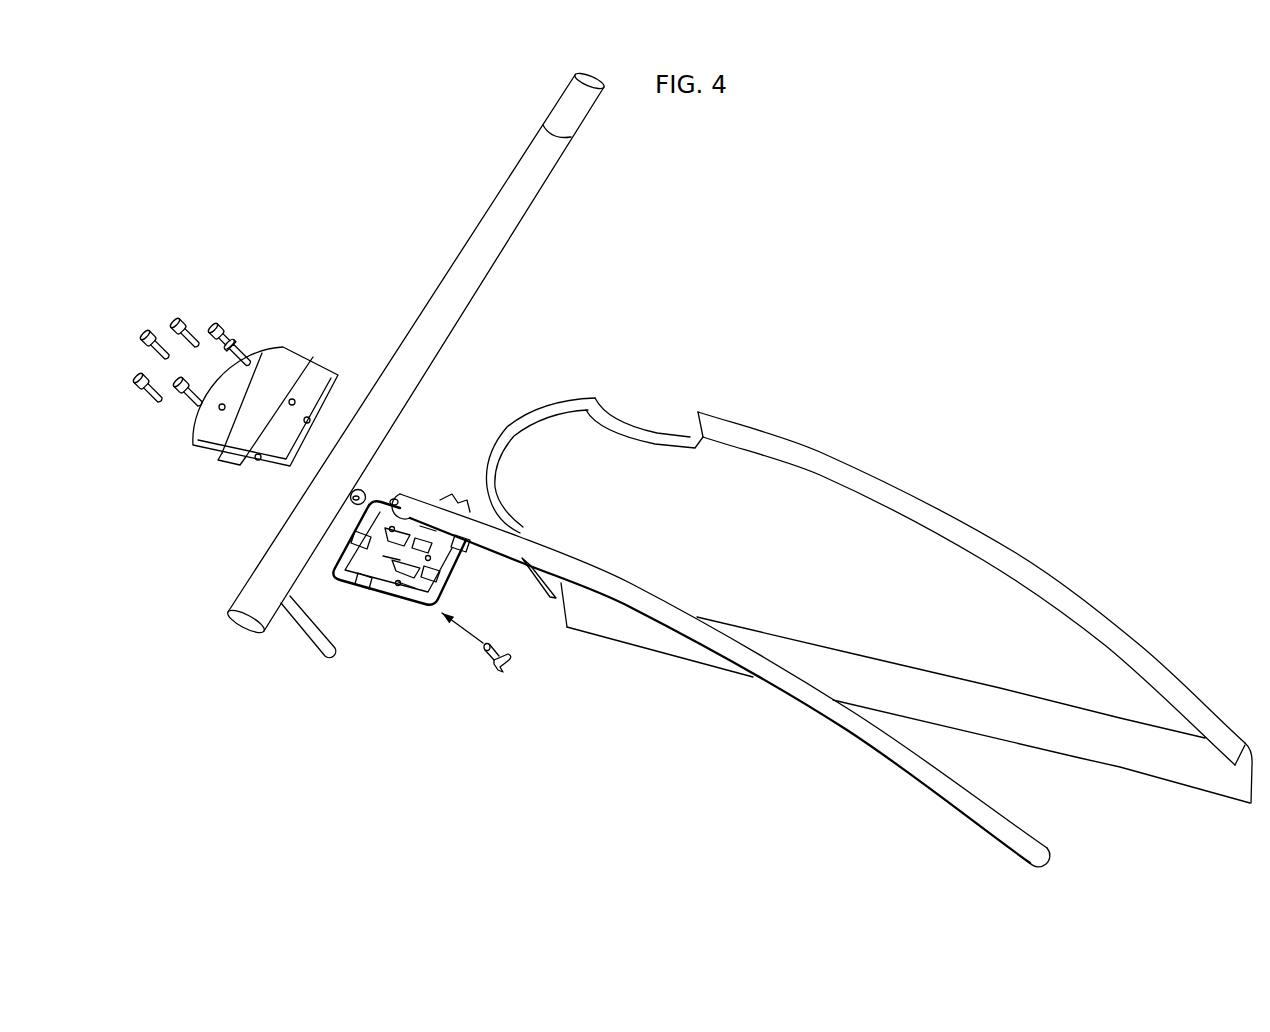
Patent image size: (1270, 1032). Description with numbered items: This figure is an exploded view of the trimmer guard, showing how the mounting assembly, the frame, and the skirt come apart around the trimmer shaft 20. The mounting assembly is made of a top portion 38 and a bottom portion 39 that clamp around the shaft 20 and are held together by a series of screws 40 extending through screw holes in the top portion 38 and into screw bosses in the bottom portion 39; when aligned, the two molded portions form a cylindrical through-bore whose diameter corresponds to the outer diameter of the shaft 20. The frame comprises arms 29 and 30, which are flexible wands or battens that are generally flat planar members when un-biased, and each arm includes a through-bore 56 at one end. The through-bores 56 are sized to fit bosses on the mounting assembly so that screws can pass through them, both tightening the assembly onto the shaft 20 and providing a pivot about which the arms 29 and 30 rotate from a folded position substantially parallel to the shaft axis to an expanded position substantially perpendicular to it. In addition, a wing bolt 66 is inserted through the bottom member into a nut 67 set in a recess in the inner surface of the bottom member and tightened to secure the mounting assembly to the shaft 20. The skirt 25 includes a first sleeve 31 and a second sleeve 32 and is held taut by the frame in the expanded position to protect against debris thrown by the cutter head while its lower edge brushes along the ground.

The shaft 20 is at (497, 260).
The skirt 25 is at (822, 588).
The arm 29 is at (300, 632).
The arm 30 is at (907, 773).
The first sleeve 31 is at (553, 398).
The second sleeve 32 is at (978, 527).
The top portion 38 is at (267, 353).
The bottom portion 39 is at (409, 653).
The screws 40 is at (185, 403).
The through-bore 56 is at (363, 488).
The wing bolt 66 is at (497, 680).
The nut 67 is at (408, 572).